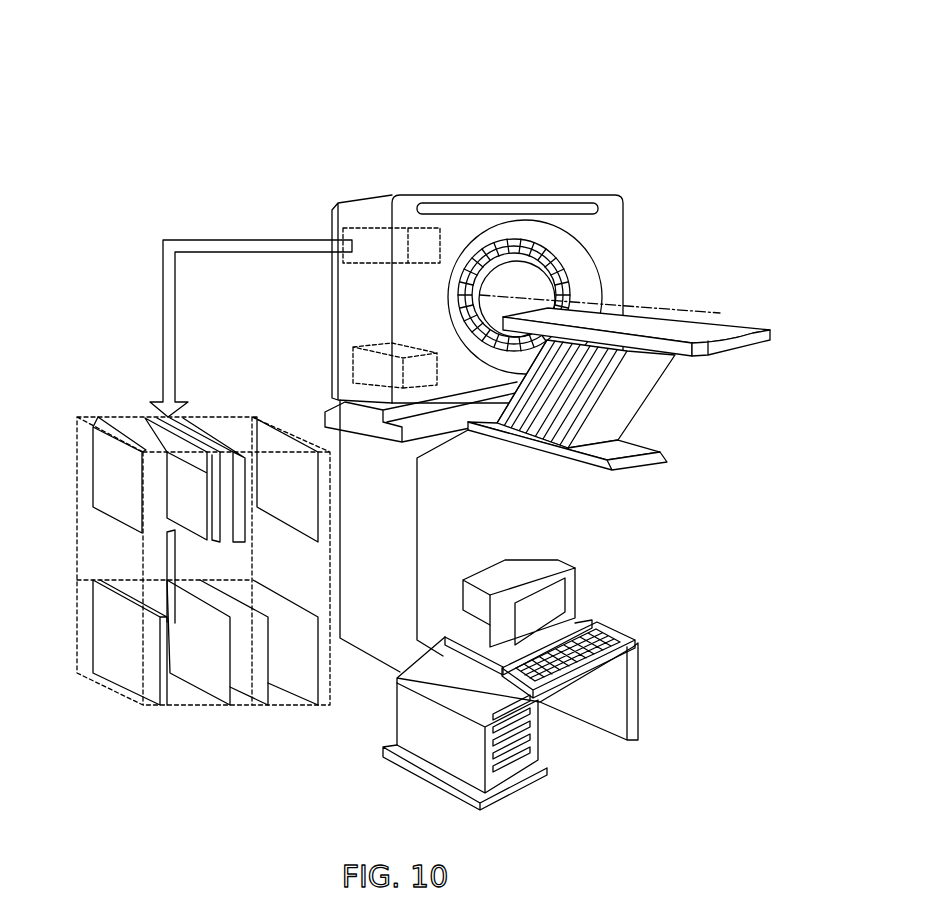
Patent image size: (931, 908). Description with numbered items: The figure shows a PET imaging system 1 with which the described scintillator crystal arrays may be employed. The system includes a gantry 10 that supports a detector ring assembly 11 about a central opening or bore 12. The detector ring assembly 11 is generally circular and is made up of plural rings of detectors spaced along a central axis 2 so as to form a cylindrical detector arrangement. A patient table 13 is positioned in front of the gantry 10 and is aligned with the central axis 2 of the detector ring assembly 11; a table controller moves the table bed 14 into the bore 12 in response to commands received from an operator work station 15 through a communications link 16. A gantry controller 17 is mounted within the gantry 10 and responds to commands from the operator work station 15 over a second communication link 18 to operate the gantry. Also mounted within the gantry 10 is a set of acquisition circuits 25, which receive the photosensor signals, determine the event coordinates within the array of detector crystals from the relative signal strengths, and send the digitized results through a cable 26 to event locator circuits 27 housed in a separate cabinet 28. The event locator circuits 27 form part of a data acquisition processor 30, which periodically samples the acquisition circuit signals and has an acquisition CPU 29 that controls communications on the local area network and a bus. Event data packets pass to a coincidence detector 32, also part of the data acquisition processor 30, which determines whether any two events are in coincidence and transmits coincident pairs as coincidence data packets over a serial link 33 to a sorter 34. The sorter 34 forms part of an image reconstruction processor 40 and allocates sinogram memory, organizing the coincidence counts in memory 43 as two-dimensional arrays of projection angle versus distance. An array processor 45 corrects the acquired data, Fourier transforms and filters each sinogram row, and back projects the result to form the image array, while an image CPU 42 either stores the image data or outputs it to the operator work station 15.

The PET imaging system 1 is at (527, 62).
The gantry 10 is at (512, 296).
The detector ring assembly 11 is at (567, 270).
The bore 12 is at (522, 297).
The central axis 2 is at (687, 303).
The table bed 14 is at (757, 333).
The patient table 13 is at (682, 393).
The acquisition circuits 25 is at (372, 228).
The cable 26 is at (177, 326).
The gantry controller 17 is at (365, 347).
The data acquisition processor 30 is at (186, 449).
The coincidence detector 32 is at (106, 491).
The event locator circuits 27 is at (175, 503).
The acquisition CPU 29 is at (276, 501).
The serial link 33 is at (176, 552).
The image reconstruction processor 40 is at (176, 615).
The sorter 34 is at (108, 655).
The memory 43 is at (184, 655).
The array processor 45 is at (240, 664).
The image CPU 42 is at (281, 655).
The cabinet 28 is at (182, 563).
The communications link 16 is at (417, 508).
The second communication link 18 is at (340, 528).
The operator work station 15 is at (586, 555).